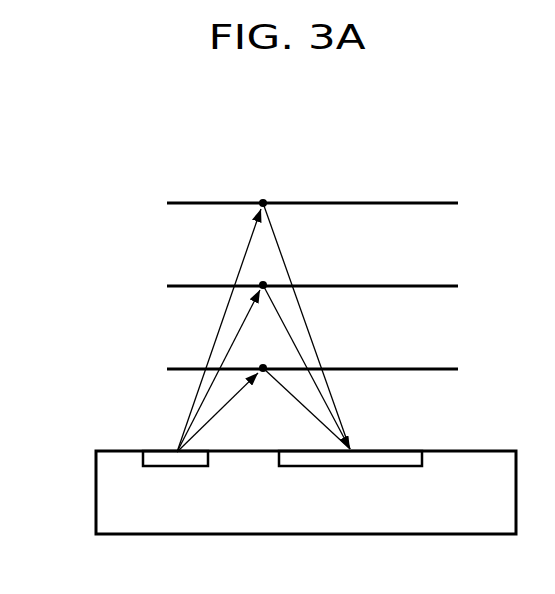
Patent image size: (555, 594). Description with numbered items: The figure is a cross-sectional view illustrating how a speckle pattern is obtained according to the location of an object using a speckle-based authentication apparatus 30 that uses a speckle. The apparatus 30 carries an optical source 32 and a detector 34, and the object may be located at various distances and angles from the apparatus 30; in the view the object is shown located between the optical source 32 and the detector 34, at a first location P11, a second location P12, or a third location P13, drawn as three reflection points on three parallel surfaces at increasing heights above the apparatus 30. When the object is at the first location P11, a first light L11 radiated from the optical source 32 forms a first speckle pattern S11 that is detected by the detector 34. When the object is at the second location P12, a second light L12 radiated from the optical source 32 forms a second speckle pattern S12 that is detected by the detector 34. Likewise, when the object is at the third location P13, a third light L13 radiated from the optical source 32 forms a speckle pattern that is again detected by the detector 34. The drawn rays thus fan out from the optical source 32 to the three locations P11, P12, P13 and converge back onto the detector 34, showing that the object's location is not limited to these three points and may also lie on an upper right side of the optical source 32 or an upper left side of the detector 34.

The speckle-based authentication apparatus 30 is at (110, 493).
The optical source 32 is at (168, 467).
The detector 34 is at (380, 468).
The first light L11 is at (219, 410).
The second light L12 is at (210, 393).
The third light L13 is at (218, 327).
The first speckle pattern S11 is at (300, 405).
The second speckle pattern S12 is at (283, 254).
The first location P11 is at (263, 366).
The second location P12 is at (263, 283).
The third location P13 is at (262, 201).